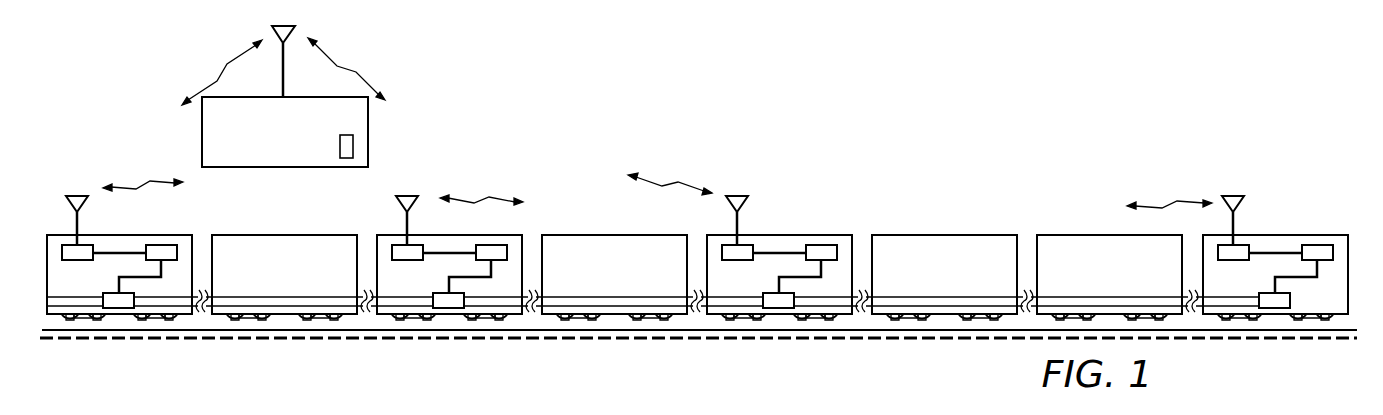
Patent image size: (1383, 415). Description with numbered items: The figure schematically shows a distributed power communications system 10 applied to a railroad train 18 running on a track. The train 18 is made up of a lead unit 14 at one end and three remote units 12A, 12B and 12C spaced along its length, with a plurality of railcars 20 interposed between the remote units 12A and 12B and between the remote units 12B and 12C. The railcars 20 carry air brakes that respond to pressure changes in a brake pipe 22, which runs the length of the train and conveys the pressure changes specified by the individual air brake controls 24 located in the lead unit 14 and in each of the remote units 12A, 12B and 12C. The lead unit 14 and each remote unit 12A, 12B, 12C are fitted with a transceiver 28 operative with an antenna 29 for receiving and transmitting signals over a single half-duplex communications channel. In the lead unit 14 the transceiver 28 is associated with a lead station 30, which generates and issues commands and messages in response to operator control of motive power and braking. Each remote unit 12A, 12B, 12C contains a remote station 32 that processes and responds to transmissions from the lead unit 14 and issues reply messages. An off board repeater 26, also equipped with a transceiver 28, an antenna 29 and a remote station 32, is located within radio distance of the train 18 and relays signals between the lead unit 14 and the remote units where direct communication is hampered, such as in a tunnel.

The distributed power communications system 10 is at (690, 157).
The remote unit 12A is at (796, 235).
The remote unit 12B is at (397, 235).
The remote unit 12C is at (150, 233).
The lead unit 14 is at (1348, 250).
The train 18 is at (490, 100).
The railcar 20 is at (277, 235).
The brake pipe 22 is at (690, 313).
The air brake control 24 is at (118, 308).
The off board repeater 26 is at (368, 121).
The transceiver 28 is at (85, 260).
The antenna 29 is at (270, 28).
The lead station 30 is at (1318, 247).
The remote station 32 is at (353, 148).